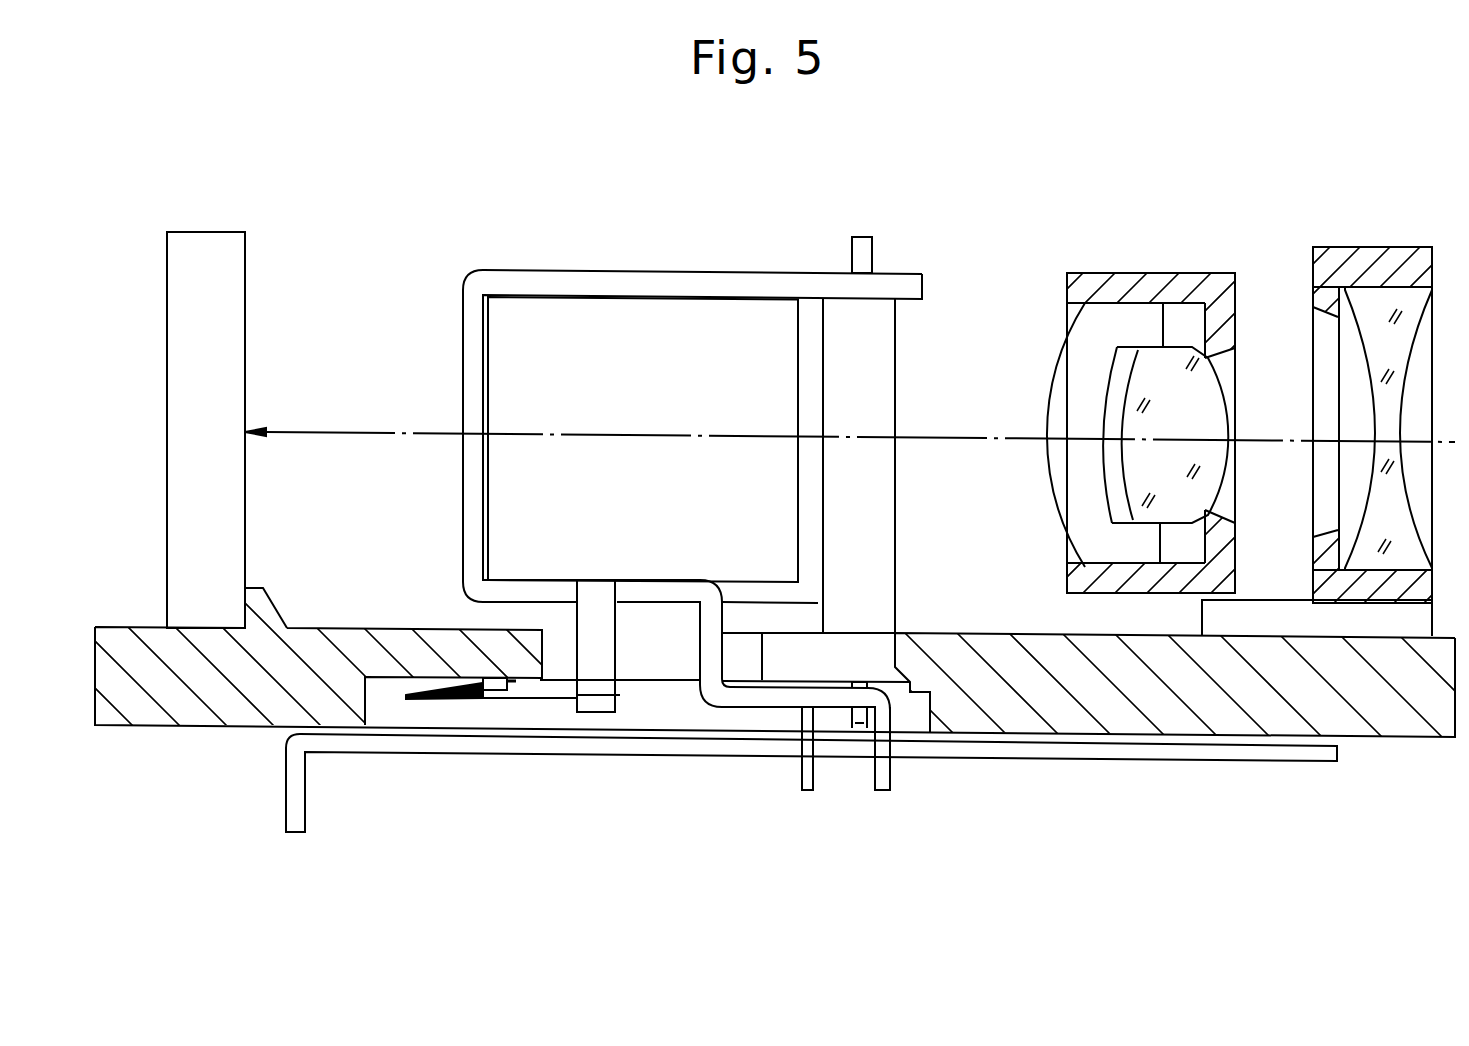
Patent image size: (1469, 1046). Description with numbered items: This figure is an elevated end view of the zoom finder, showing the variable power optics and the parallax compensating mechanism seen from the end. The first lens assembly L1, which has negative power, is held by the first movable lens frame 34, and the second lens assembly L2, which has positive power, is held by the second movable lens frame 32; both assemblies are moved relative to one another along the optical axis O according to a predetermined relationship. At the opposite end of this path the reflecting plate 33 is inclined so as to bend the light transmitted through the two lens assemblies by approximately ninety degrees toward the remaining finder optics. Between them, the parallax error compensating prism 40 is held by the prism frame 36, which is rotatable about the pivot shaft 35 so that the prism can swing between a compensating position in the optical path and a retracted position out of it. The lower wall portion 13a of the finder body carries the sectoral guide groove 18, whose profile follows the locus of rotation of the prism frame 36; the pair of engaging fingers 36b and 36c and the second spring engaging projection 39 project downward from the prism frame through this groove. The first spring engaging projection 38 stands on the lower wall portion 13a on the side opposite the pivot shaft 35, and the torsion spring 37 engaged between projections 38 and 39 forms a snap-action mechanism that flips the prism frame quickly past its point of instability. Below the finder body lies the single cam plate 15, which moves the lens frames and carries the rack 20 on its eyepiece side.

The reflecting plate 33 is at (210, 240).
The parallax error compensating prism 40 is at (695, 315).
The prism frame 36 is at (772, 270).
The pivot shaft 35 is at (868, 240).
The second movable lens frame 32 is at (1122, 283).
The second lens assembly L2 is at (1172, 365).
The first movable lens frame 34 is at (1337, 280).
The first lens assembly L1 is at (1400, 300).
The optical axis O is at (963, 437).
The rack 20 is at (284, 810).
The torsion spring 37 is at (427, 707).
The first spring engaging projection 38 is at (502, 704).
The second spring engaging projection 39 is at (596, 714).
The sectoral guide groove 18 is at (655, 657).
The engaging finger 36b is at (797, 773).
The engaging finger 36c is at (893, 786).
The cam plate 15 is at (1022, 762).
The lower wall portion 13a is at (1212, 718).